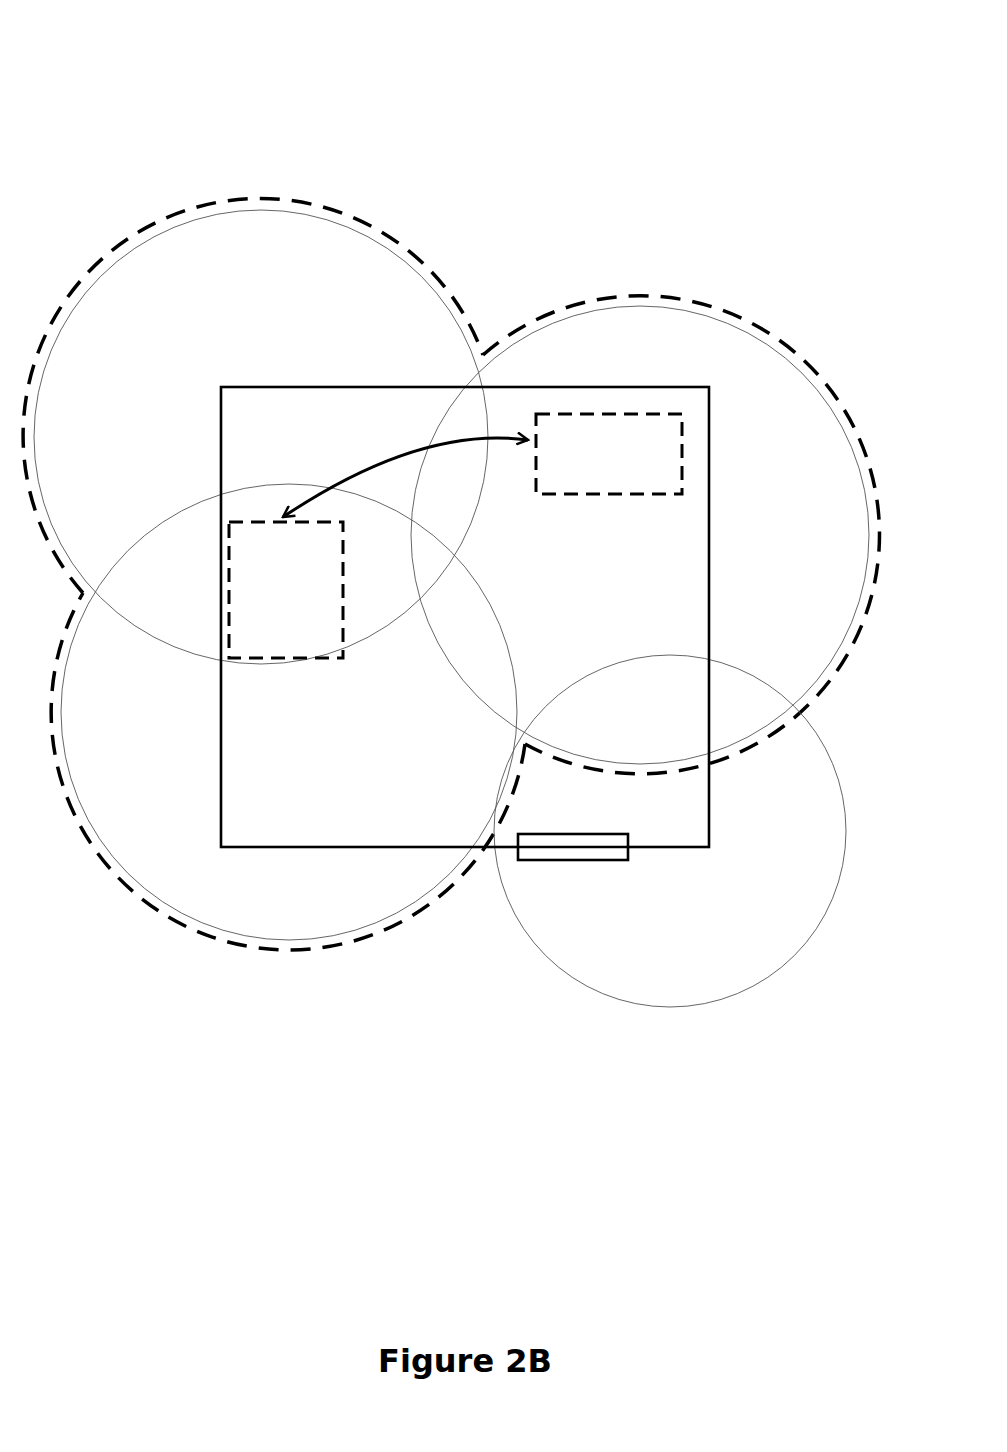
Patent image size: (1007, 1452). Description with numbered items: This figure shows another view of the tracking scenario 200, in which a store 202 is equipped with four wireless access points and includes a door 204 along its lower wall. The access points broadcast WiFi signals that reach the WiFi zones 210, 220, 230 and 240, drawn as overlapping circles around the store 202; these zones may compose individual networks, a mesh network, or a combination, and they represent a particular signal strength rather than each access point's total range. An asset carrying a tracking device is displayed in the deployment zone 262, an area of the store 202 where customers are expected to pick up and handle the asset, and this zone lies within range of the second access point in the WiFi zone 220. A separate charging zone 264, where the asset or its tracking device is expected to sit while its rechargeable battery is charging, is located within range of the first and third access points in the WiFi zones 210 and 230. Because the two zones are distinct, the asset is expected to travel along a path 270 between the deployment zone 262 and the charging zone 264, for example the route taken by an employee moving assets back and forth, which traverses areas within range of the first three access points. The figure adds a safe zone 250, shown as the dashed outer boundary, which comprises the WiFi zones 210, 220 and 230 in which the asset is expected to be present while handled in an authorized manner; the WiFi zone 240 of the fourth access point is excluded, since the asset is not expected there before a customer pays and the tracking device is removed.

The tracking scenario 200 is at (164, 84).
The store 202 is at (223, 405).
The door 204 is at (571, 862).
The WiFi zone 210 is at (297, 212).
The WiFi zone 220 is at (675, 306).
The WiFi zone 230 is at (290, 942).
The WiFi zone 240 is at (801, 958).
The safe zone 250 is at (592, 301).
The deployment zone 262 is at (609, 453).
The charging zone 264 is at (286, 590).
The path 270 is at (385, 462).